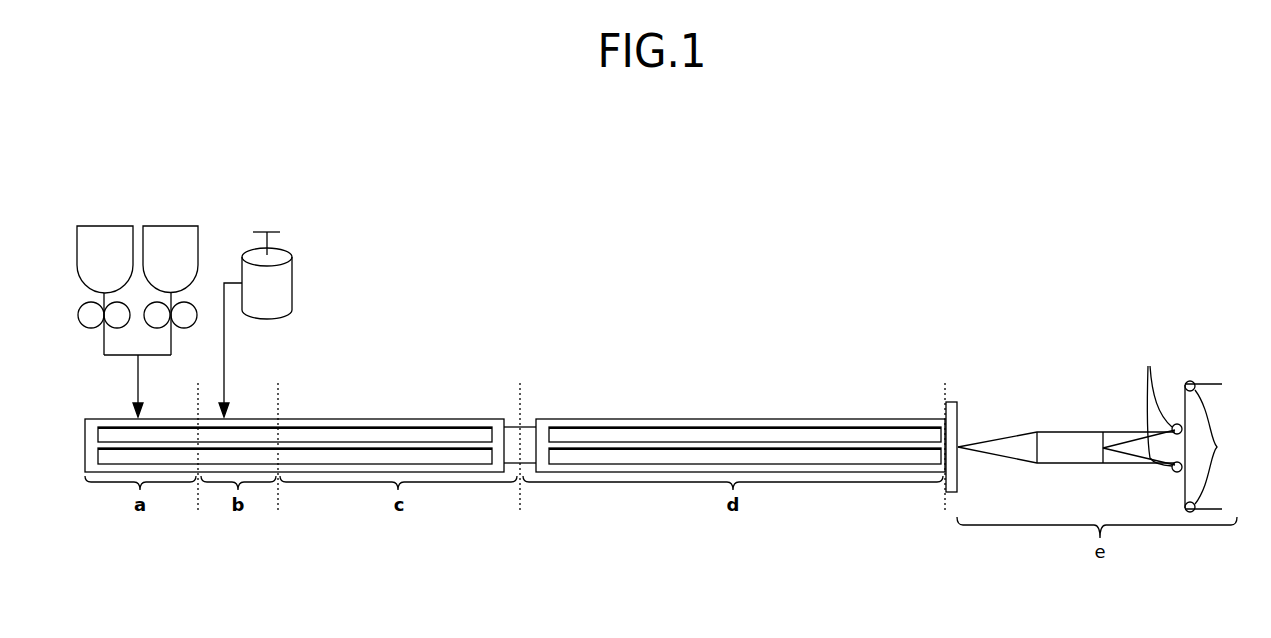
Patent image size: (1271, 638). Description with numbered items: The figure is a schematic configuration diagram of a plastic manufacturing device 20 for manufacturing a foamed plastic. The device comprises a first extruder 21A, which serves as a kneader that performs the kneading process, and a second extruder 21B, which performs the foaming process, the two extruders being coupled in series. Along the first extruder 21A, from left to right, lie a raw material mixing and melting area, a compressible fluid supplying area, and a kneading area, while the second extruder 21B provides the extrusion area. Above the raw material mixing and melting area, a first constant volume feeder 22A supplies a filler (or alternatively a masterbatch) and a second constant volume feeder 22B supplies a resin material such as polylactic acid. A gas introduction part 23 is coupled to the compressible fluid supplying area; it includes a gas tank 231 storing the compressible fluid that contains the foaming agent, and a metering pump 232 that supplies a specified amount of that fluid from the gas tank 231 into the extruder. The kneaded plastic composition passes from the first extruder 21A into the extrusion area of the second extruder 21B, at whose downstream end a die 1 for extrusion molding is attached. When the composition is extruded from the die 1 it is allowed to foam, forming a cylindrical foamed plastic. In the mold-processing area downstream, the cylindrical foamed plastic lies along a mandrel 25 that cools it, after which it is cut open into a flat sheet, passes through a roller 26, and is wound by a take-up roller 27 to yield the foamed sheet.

The die 1 is at (951, 398).
The plastic manufacturing device 20 is at (753, 340).
The first extruder 21A is at (415, 420).
The second extruder 21B is at (631, 418).
The first constant volume feeder 22A is at (103, 237).
The second constant volume feeder 22B is at (170, 237).
The gas introduction part 23 is at (274, 275).
The gas tank 231 is at (282, 248).
The metering pump 232 is at (258, 214).
The mandrel 25 is at (1067, 440).
The roller 26 is at (1154, 403).
The take-up roller 27 is at (1209, 446).